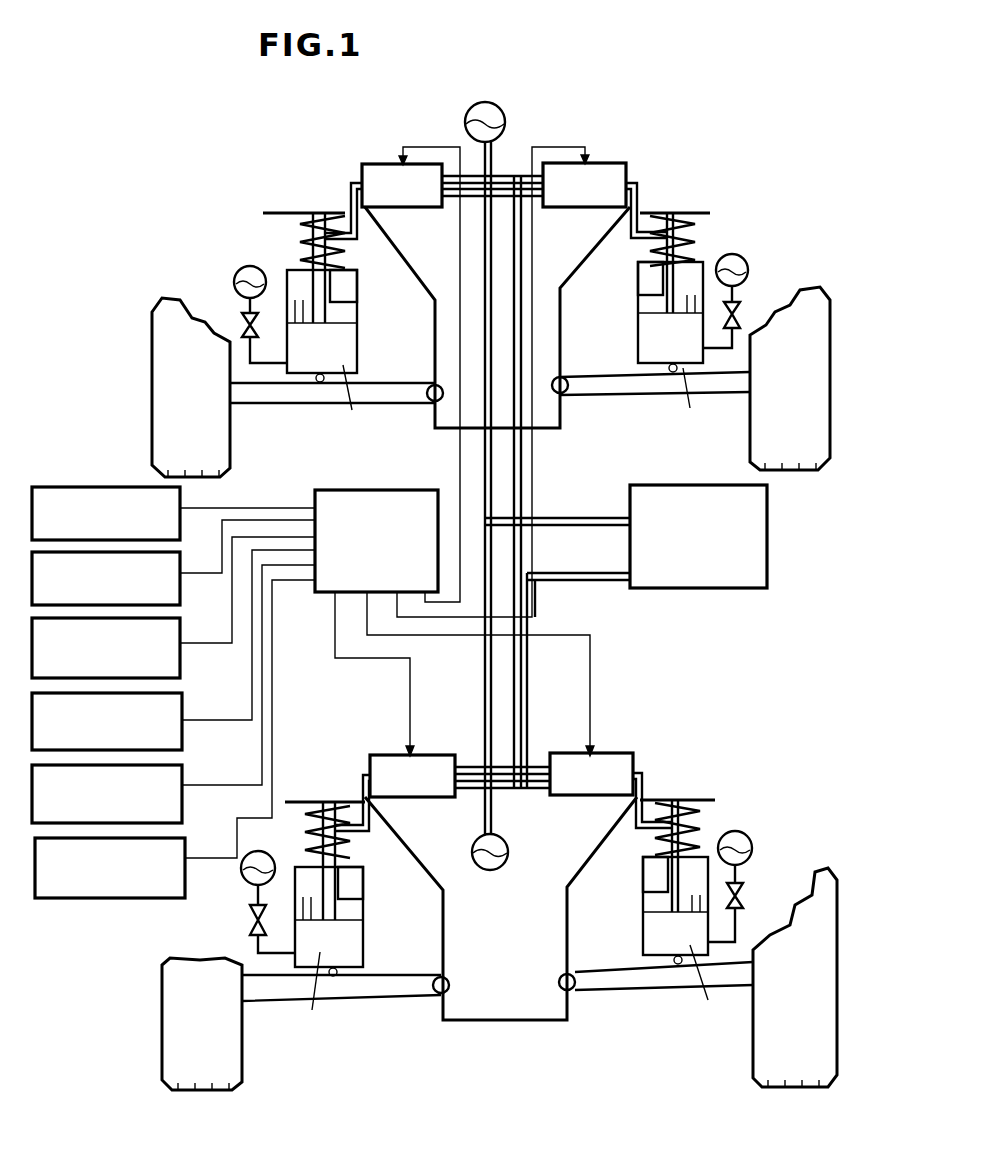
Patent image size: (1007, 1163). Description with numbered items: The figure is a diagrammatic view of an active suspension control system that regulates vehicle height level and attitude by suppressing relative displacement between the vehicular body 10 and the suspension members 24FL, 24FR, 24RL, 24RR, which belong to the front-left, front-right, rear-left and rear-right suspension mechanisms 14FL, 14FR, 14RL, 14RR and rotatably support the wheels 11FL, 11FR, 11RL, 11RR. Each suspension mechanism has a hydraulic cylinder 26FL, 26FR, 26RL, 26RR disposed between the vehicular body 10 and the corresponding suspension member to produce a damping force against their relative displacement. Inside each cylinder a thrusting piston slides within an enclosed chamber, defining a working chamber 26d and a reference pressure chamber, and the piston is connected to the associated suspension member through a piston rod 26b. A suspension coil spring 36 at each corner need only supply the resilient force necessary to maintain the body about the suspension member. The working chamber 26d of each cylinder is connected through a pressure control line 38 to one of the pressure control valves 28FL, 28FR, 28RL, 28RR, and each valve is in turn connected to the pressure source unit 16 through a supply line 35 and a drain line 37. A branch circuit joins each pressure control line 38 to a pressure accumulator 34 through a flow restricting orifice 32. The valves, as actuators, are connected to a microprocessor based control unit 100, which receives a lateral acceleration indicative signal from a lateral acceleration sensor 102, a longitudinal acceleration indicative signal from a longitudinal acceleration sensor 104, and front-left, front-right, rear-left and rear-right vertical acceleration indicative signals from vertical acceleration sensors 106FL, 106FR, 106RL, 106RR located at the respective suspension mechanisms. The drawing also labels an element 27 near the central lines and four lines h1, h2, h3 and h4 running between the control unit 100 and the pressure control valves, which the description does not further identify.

The vehicular body 10 is at (562, 432).
The front-left wheel 11FL is at (152, 357).
The front-right wheel 11FR is at (752, 454).
The rear-left wheel 11RL is at (150, 1037).
The rear-right wheel 11RR is at (752, 1046).
The front-left suspension mechanism 14FL is at (335, 297).
The front-right suspension mechanism 14FR is at (641, 292).
The rear-left suspension mechanism 14RL is at (355, 889).
The rear-right suspension mechanism 14RR is at (644, 882).
The pressure source unit 16 is at (767, 546).
The front-left suspension member 24FL is at (330, 405).
The front-right suspension member 24FR is at (642, 400).
The rear-left suspension member 24RL is at (394, 1006).
The rear-right suspension member 24RR is at (671, 1000).
The front-left hydraulic cylinder 26FL is at (357, 353).
The front-right hydraulic cylinder 26FR is at (638, 354).
The rear-left hydraulic cylinder 26RL is at (373, 952).
The rear-right hydraulic cylinder 26RR is at (642, 948).
The piston rod 26b is at (340, 291).
The working chamber 26d is at (502, 700).
The accumulator 27 is at (493, 102).
The front-left pressure control valve 28FL is at (384, 164).
The front-right pressure control valve 28FR is at (603, 163).
The rear-left pressure control valve 28RL is at (448, 755).
The rear-right pressure control valve 28RR is at (552, 753).
The orifice 32 is at (242, 324).
The pressure accumulator 34 is at (236, 270).
The supply line 35 is at (590, 518).
The suspension coil spring 36 is at (300, 232).
The drain line 37 is at (590, 573).
The pressure control line 38 is at (352, 186).
The control unit 100 is at (394, 490).
The lateral acceleration sensor 102 is at (90, 486).
The longitudinal acceleration sensor 104 is at (196, 597).
The front-left vertical acceleration sensor 106FL is at (182, 672).
The front-right vertical acceleration sensor 106FR is at (184, 742).
The rear-left vertical acceleration sensor 106RL is at (184, 804).
The rear-right vertical acceleration sensor 106RR is at (100, 902).
The control signal line h1 is at (459, 249).
The control signal line h2 is at (532, 257).
The control signal line h3 is at (377, 662).
The control signal line h4 is at (450, 642).